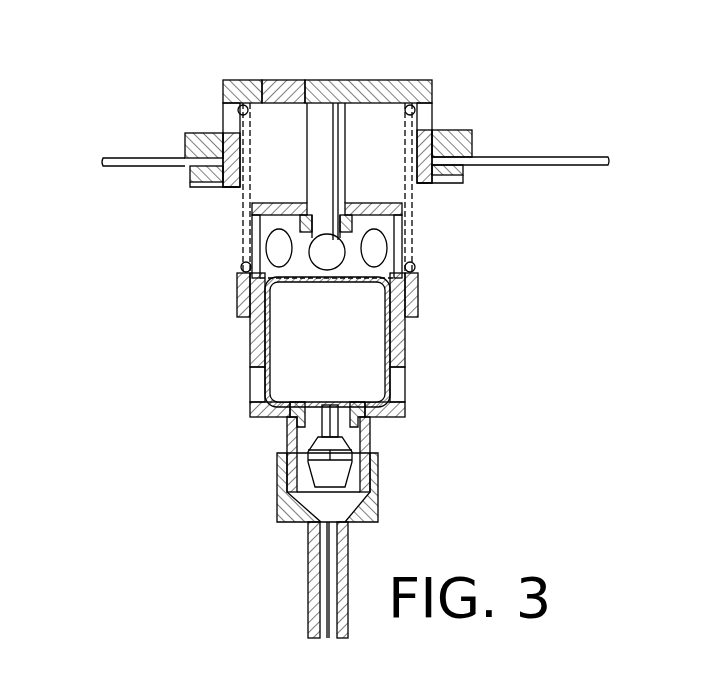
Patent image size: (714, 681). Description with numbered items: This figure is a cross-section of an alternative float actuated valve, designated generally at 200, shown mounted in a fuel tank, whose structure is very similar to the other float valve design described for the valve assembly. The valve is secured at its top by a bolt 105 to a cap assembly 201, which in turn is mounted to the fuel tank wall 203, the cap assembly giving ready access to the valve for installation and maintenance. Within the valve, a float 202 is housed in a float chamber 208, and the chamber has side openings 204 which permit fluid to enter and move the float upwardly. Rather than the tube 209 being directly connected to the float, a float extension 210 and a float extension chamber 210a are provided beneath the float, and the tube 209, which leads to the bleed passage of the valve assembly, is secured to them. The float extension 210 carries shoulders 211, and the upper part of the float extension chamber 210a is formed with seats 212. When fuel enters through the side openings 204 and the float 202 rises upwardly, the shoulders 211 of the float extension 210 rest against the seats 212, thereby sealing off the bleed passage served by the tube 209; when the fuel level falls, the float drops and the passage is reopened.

The float actuated valve 200 is at (185, 308).
The cap 201 is at (365, 80).
The float 202 is at (300, 330).
The mounting rod 203 is at (530, 157).
The side openings 204 is at (405, 373).
The bolt 105 is at (332, 152).
The float chamber 208 is at (407, 322).
The tube 209 is at (310, 572).
The float extension 210 is at (345, 448).
The float extension chamber 210a is at (355, 476).
The shoulders 211 is at (372, 425).
The seats 212 is at (293, 432).